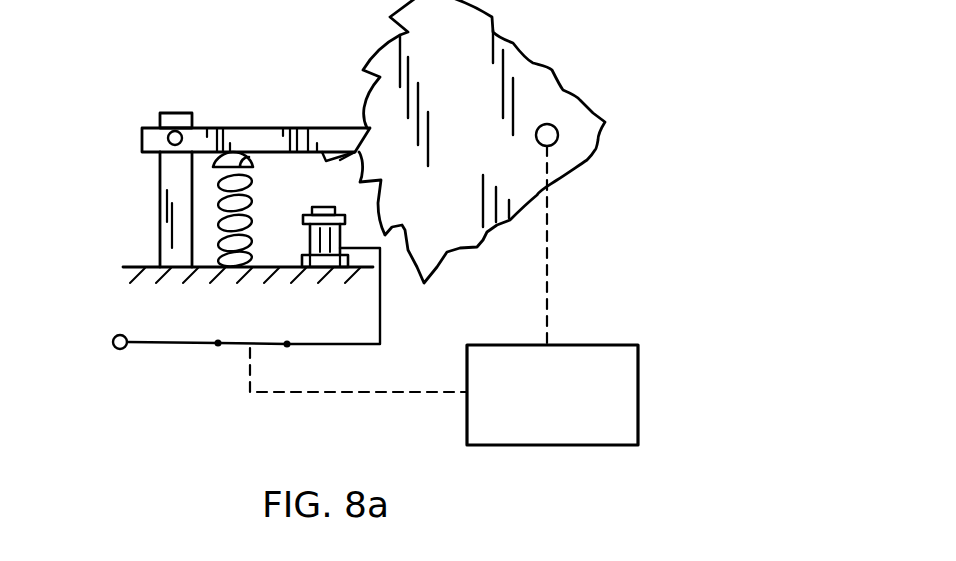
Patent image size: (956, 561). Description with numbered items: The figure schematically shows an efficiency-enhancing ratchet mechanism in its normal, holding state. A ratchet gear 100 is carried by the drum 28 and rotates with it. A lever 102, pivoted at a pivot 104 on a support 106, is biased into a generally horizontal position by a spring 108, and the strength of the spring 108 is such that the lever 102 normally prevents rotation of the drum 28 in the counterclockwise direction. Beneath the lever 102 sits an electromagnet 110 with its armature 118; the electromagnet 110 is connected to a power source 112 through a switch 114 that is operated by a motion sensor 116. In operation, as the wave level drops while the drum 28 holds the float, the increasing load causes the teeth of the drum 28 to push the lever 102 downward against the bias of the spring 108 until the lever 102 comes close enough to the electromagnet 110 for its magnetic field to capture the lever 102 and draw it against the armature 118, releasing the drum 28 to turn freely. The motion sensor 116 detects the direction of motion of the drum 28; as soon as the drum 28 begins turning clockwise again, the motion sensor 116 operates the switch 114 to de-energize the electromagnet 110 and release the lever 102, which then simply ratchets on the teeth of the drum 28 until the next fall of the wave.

The drum 28 is at (483, 146).
The ratchet gear 100 is at (383, 50).
The lever 102 is at (266, 143).
The pivot 104 is at (168, 137).
The support 106 is at (173, 168).
The spring 108 is at (215, 211).
The electromagnet 110 is at (310, 238).
The power source 112 is at (113, 344).
The switch 114 is at (238, 347).
The motion sensor 116 is at (613, 353).
The armature 118 is at (333, 206).